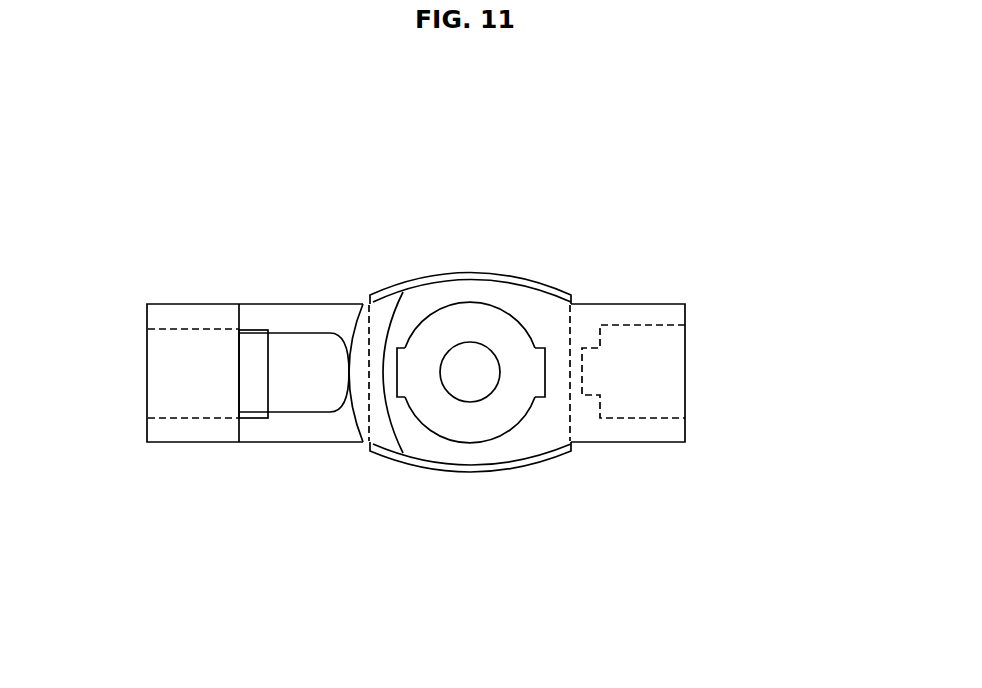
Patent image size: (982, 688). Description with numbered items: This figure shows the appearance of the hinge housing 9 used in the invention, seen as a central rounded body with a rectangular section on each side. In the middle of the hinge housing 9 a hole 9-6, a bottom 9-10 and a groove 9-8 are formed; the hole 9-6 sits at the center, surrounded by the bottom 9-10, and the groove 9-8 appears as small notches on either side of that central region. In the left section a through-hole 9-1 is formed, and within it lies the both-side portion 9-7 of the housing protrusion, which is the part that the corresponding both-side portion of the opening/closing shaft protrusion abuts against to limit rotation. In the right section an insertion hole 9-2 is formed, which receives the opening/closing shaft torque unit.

The hinge housing 9 is at (167, 298).
The through-hole 9-1 is at (167, 375).
The insertion hole 9-2 is at (638, 377).
The hole 9-6 is at (473, 372).
The both-side portion 9-7 is at (316, 377).
The groove 9-8 is at (408, 338).
The bottom 9-10 is at (533, 419).